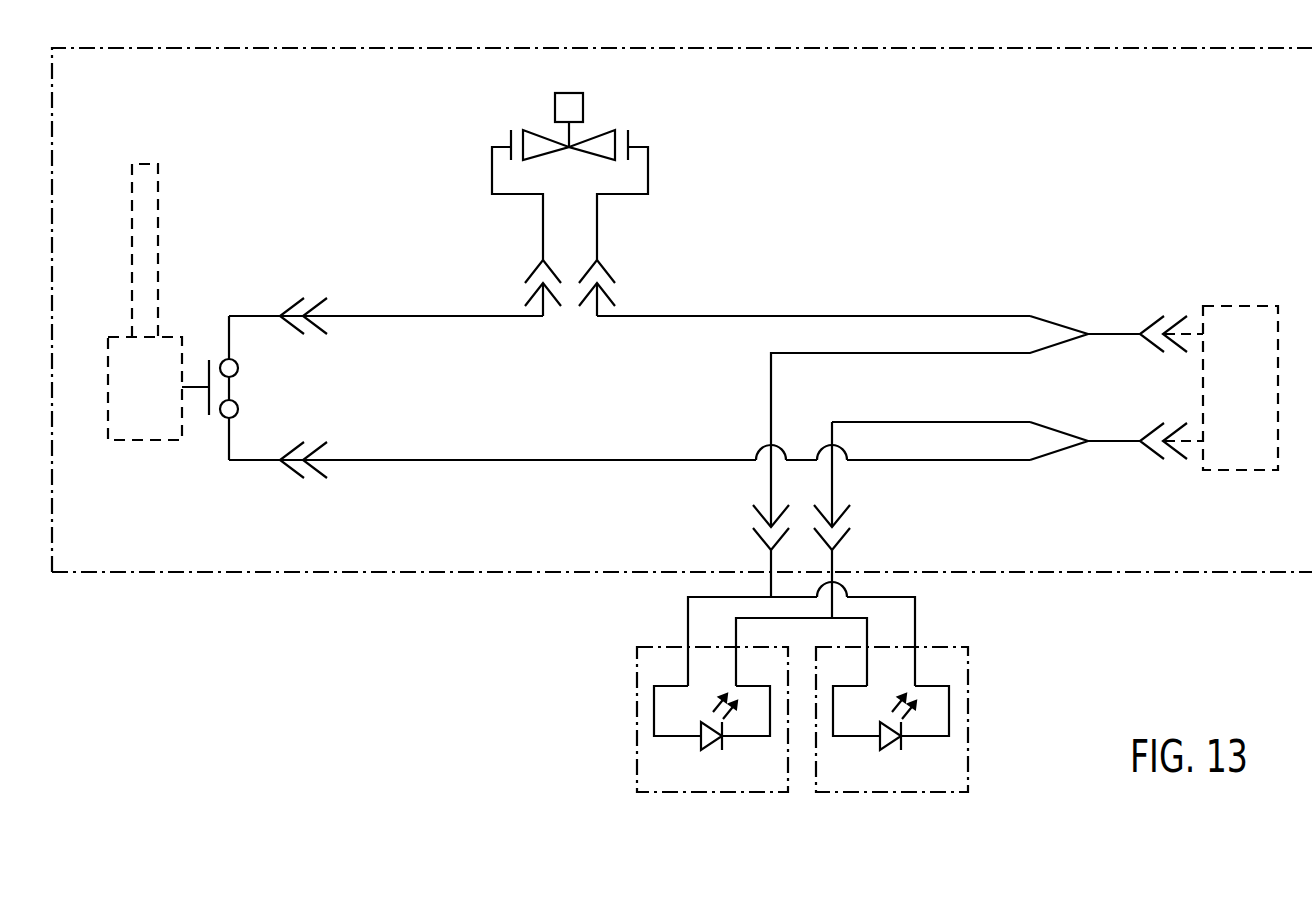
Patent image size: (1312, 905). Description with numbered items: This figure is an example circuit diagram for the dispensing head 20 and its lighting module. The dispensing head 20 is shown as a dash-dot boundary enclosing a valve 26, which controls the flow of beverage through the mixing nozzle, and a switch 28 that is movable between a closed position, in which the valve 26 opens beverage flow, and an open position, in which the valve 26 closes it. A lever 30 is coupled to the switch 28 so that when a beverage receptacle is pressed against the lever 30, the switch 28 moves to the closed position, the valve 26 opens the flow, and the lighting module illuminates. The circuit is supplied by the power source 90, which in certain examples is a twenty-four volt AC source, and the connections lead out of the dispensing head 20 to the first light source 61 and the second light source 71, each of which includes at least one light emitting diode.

The dispensing head 20 is at (1092, 48).
The valve 26 is at (519, 94).
The switch 28 is at (143, 440).
The lever 30 is at (158, 266).
The first light source 61 is at (890, 792).
The second light source 71 is at (712, 792).
The power source 90 is at (1240, 306).